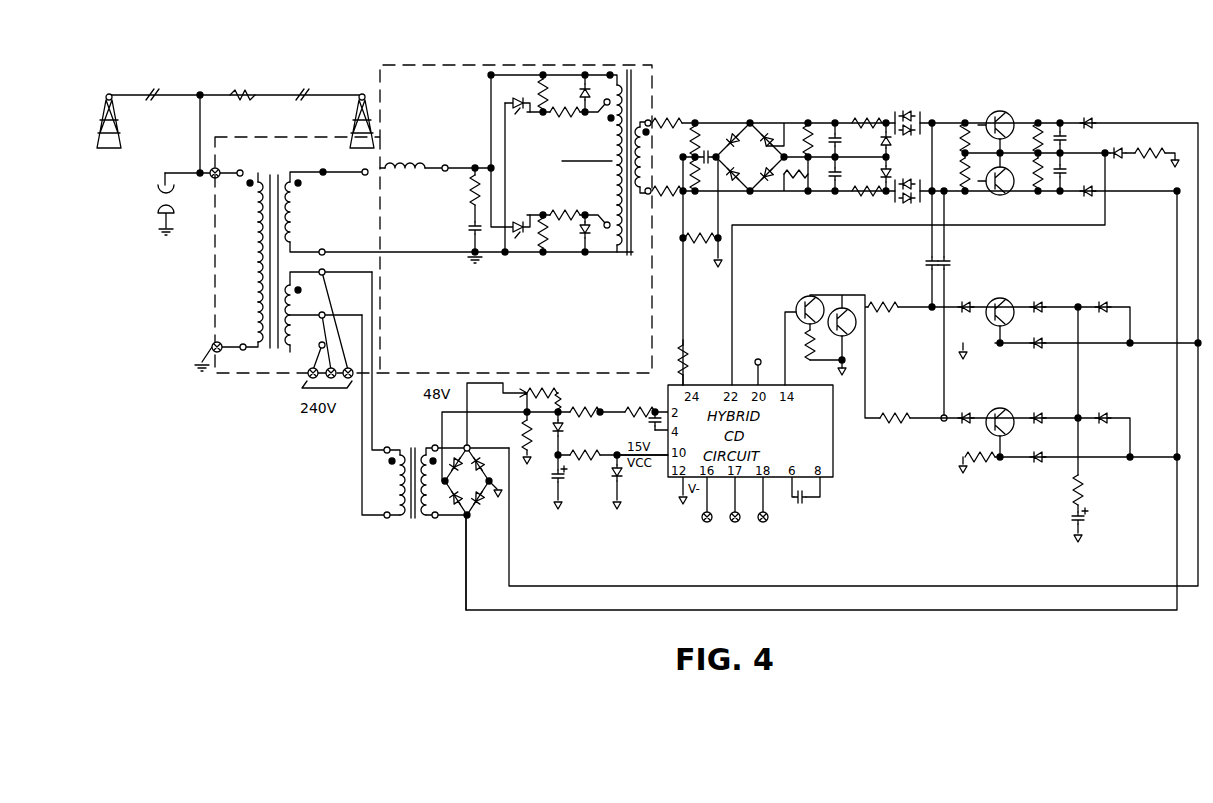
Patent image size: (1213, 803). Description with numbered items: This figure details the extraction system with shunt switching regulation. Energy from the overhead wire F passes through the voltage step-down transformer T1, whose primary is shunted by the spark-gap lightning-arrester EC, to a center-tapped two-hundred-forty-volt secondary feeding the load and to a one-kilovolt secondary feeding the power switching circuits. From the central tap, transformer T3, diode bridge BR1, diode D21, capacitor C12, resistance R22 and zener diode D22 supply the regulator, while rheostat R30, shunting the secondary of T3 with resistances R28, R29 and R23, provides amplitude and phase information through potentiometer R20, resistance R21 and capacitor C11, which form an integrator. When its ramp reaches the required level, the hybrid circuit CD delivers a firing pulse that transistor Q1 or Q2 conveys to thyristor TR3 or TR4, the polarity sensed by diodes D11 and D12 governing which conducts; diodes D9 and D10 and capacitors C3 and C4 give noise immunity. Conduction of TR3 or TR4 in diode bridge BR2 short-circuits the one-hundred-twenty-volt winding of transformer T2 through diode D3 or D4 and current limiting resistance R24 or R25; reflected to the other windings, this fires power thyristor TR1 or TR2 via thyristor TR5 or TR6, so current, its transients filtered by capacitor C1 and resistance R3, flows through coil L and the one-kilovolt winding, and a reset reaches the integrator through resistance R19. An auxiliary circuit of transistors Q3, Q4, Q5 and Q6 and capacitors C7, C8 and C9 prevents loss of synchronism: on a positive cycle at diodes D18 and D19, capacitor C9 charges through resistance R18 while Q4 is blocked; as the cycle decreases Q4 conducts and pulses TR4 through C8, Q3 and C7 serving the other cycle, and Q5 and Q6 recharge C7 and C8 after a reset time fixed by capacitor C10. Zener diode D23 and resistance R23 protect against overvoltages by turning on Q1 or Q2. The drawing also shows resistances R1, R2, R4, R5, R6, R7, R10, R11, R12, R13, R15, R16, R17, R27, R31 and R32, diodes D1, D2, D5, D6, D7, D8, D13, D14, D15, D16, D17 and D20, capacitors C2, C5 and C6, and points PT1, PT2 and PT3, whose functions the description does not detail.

The overhead wire F is at (225, 95).
The lightning-arrester EC is at (152, 198).
The voltage step-down transformer T1 is at (283, 261).
The coil L is at (410, 170).
The resistance R3 is at (463, 195).
The capacitor C1 is at (459, 235).
The power thyristor TR1 is at (512, 99).
The resistor R1 is at (551, 93).
The diode D5 is at (593, 93).
The current limiting resistance R25 is at (613, 161).
The power thyristor TR2 is at (516, 218).
The resistor R27 is at (566, 207).
The resistor R2 is at (552, 233).
The diode D6 is at (593, 233).
The thyristor TR5 is at (617, 148).
The thyristor TR6 is at (617, 180).
The transformer T2 is at (593, 180).
The current limiting resistance R24 is at (671, 114).
The resistor R4 is at (685, 140).
The capacitor C2 is at (708, 149).
The resistor R5 is at (703, 182).
The resistor R31 is at (700, 229).
The diode bridge BR2 is at (752, 122).
The diode D3 is at (731, 125).
The diode D4 is at (731, 177).
The thyristor TR3 is at (770, 135).
The thyristor TR4 is at (763, 178).
The resistor R6 is at (812, 130).
The resistor R7 is at (796, 170).
The capacitor C3 is at (843, 140).
The capacitor C4 is at (843, 174).
The diode D1 is at (882, 124).
The diode D2 is at (877, 187).
The diode D9 is at (907, 112).
The diode D7 is at (908, 144).
The diode D8 is at (907, 185).
The diode D10 is at (904, 206).
The resistor R10 is at (954, 138).
The resistor R11 is at (954, 172).
The transistor Q1 is at (1000, 111).
The transistor Q2 is at (1000, 193).
The resistor R12 is at (1038, 123).
The resistor R13 is at (1039, 182).
The capacitor C5 is at (1068, 138).
The capacitor C6 is at (1068, 172).
The diode D11 is at (1090, 120).
The diode D12 is at (1082, 202).
The zener diode D23 is at (1120, 143).
The resistance R23 is at (840, 306).
The capacitor C7 is at (917, 264).
The capacitor C8 is at (955, 264).
The transistor Q5 is at (805, 298).
The transistor Q6 is at (860, 306).
The resistor R32 is at (805, 336).
The resistor R16 is at (882, 300).
The resistor R17 is at (890, 409).
The resistance R19 is at (700, 362).
The diode D16 is at (963, 300).
The transistor Q3 is at (1012, 290).
The diode D13 is at (1039, 299).
The diode D14 is at (1103, 305).
The diode D15 is at (1036, 335).
The diode D20 is at (963, 410).
The transistor Q4 is at (1003, 408).
The diode D17 is at (1036, 410).
The diode D18 is at (1104, 410).
The diode D19 is at (1036, 450).
The resistor R15 is at (971, 452).
The resistance R18 is at (1096, 490).
The capacitor C9 is at (1095, 518).
The potentiometer PT1 is at (702, 527).
The potentiometer PT2 is at (732, 527).
The potentiometer PT3 is at (768, 520).
The capacitor C10 is at (811, 504).
The rheostat R30 is at (481, 400).
The resistance R29 is at (536, 384).
The resistance R28 is at (550, 401).
The potentiometer R20 is at (585, 403).
The resistance R21 is at (640, 403).
The capacitor C11 is at (641, 423).
The diode D21 is at (572, 428).
The resistance R22 is at (585, 449).
The capacitor C12 is at (574, 478).
The zener diode D22 is at (631, 477).
The voltage step-down transformer T3 is at (406, 468).
The diode bridge BR1 is at (471, 491).